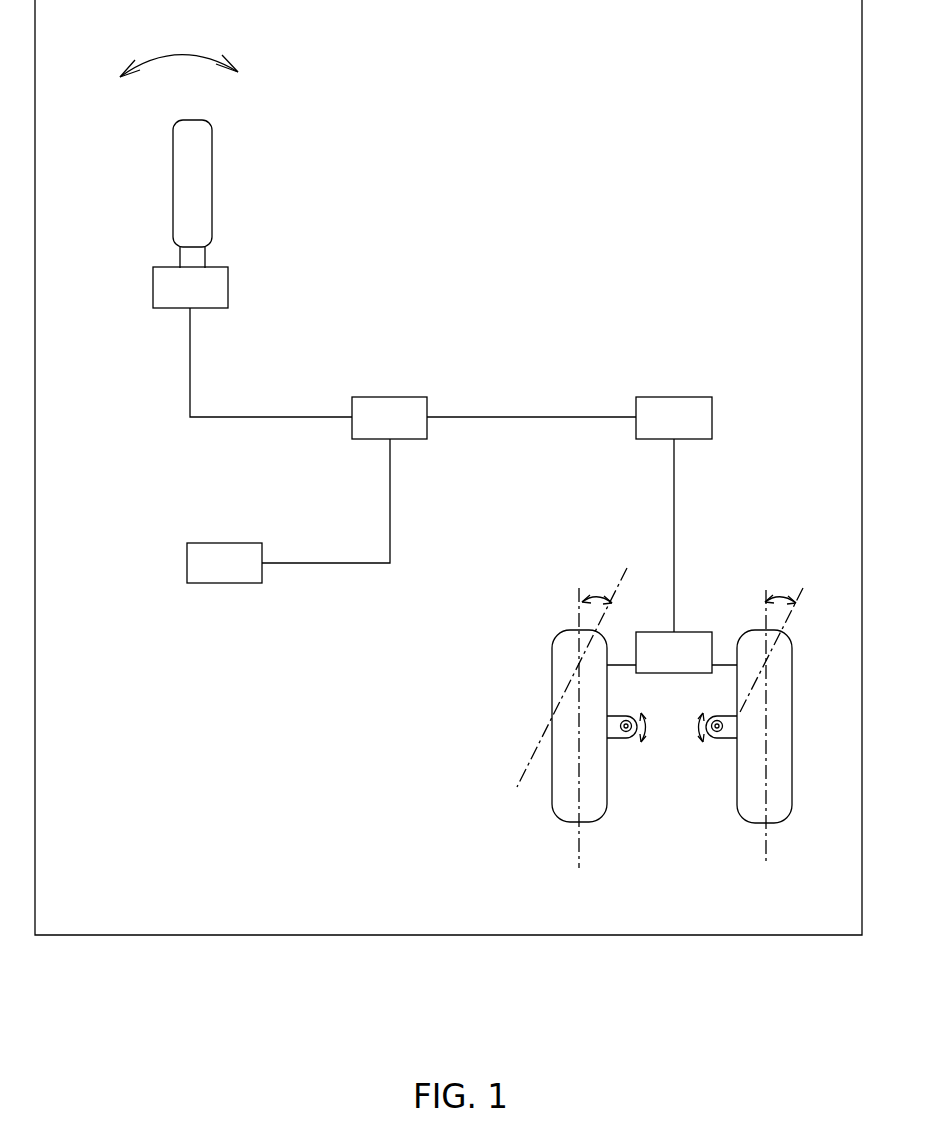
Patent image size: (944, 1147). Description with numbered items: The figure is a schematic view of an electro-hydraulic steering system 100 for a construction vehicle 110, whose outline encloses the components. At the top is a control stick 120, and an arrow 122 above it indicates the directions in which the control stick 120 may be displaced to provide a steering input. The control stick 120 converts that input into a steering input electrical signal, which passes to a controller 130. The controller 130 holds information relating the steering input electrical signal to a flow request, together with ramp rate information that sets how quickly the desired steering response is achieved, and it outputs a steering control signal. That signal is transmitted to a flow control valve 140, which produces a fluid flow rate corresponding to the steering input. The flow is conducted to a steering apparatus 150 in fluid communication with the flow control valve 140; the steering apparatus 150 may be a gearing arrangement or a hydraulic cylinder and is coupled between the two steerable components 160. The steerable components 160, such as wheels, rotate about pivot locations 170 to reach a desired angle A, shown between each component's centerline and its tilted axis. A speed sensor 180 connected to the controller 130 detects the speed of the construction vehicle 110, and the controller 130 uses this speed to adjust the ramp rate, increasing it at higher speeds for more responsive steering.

The electro-hydraulic steering system 100 is at (360, 655).
The construction vehicle 110 is at (723, 935).
The control stick 120 is at (228, 287).
The arrow 122 is at (205, 50).
The controller 130 is at (377, 397).
The flow control valve 140 is at (685, 397).
The steering apparatus 150 is at (698, 632).
The steerable components 160 is at (552, 668).
The pivot locations 170 is at (720, 740).
The speed sensor 180 is at (187, 563).